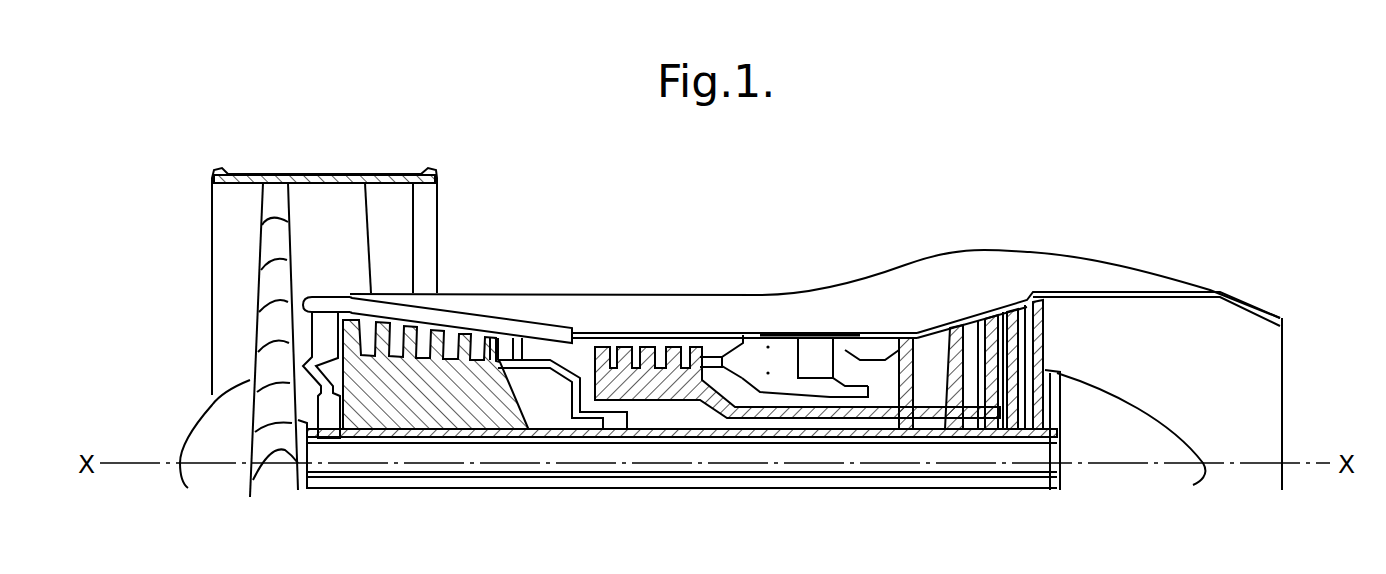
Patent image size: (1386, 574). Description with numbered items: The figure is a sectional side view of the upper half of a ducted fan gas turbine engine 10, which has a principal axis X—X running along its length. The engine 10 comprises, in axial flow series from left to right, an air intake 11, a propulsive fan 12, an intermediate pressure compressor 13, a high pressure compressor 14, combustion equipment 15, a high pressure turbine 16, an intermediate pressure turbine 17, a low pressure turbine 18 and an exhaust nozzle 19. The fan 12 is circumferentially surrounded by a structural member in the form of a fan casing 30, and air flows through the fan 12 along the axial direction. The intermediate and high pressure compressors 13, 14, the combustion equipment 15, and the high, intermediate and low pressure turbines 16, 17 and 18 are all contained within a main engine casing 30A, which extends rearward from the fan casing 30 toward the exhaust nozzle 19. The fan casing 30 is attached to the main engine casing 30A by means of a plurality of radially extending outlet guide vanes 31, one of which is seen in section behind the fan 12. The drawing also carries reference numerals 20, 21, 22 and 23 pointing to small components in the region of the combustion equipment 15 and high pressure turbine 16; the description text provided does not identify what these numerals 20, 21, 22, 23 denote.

The ducted fan gas turbine engine 10 is at (597, 237).
The air intake 11 is at (186, 295).
The propulsive fan 12 is at (281, 212).
The intermediate pressure compressor 13 is at (427, 382).
The high pressure compressor 14 is at (657, 300).
The combustion equipment 15 is at (819, 315).
The high pressure turbine 16 is at (907, 327).
The intermediate pressure turbine 17 is at (960, 322).
The low pressure turbine 18 is at (1045, 330).
The exhaust nozzle 19 is at (1258, 408).
The cover plate 20 is at (762, 396).
The retaining plate 21 is at (843, 385).
The seal member 22 is at (800, 380).
The bracket 23 is at (768, 300).
The fan casing 30 is at (393, 162).
The main engine casing 30A is at (557, 283).
The outlet guide vanes 31 is at (397, 207).